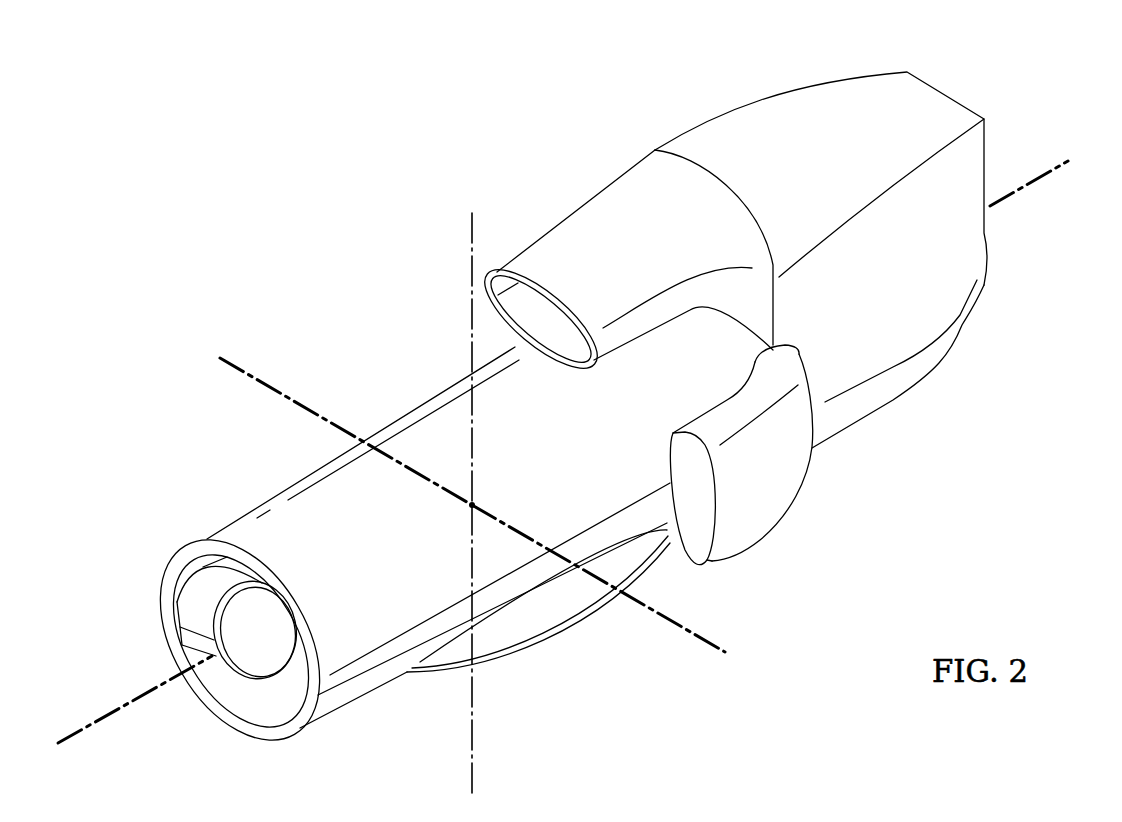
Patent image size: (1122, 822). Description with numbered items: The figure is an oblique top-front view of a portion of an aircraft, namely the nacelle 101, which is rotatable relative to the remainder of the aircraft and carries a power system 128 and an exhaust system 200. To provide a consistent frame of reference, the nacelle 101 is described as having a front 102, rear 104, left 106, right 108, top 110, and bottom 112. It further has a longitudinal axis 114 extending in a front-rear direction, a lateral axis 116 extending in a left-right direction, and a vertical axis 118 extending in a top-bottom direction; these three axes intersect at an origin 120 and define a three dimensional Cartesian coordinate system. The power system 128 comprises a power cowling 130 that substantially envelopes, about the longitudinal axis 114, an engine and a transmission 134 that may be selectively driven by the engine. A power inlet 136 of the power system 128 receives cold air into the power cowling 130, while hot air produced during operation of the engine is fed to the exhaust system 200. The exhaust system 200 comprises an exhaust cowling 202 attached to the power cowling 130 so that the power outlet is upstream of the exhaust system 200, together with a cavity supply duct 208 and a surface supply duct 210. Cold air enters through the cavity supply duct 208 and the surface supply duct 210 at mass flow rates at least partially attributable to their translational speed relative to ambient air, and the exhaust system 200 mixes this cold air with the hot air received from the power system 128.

The nacelle 101 is at (350, 93).
The front 102 is at (118, 742).
The rear 104 is at (1035, 152).
The left 106 is at (222, 343).
The right 108 is at (743, 640).
The top 110 is at (458, 181).
The bottom 112 is at (460, 748).
The longitudinal axis 114 is at (80, 730).
The lateral axis 116 is at (232, 370).
The vertical axis 118 is at (470, 228).
The origin 120 is at (476, 504).
The power system 128 is at (405, 372).
The power cowling 130 is at (273, 492).
The transmission 134 is at (210, 655).
The power inlet 136 is at (248, 712).
The exhaust system 200 is at (808, 67).
The exhaust cowling 202 is at (890, 402).
The cavity supply duct 208 is at (545, 354).
The surface supply duct 210 is at (734, 548).